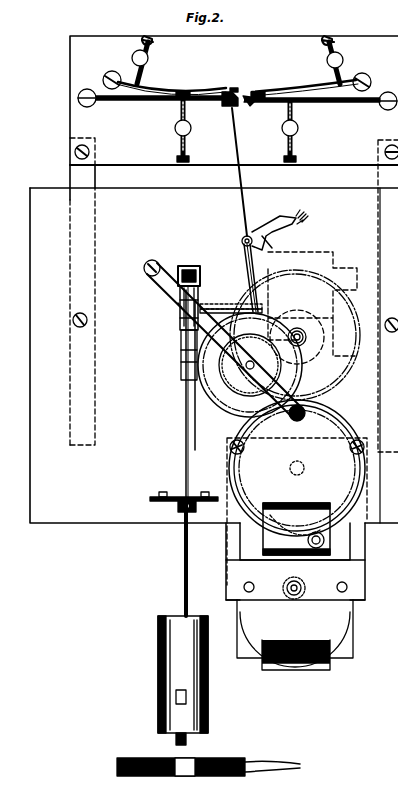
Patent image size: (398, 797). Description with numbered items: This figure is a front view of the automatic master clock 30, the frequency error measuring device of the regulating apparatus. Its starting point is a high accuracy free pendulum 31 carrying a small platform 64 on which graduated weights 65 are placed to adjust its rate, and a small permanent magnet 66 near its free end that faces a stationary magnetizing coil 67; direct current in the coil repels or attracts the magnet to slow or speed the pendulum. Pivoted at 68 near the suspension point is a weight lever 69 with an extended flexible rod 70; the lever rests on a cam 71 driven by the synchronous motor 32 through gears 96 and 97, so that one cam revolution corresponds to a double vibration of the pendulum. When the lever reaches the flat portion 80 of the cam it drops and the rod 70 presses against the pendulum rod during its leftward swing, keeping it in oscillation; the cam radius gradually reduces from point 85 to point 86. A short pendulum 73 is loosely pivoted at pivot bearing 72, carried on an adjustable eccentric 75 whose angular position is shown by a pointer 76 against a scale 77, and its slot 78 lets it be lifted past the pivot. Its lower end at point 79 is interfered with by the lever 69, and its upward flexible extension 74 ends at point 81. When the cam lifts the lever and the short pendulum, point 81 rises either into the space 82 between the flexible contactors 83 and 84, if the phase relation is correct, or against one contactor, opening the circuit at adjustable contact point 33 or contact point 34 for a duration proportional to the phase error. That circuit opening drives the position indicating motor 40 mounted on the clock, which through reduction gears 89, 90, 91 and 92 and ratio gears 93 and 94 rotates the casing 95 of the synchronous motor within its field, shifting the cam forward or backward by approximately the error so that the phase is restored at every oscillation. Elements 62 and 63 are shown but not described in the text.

The master clock 30 is at (140, 213).
The free pendulum 31 is at (182, 566).
The synchronous motor 32 is at (333, 252).
The adjustable contact point 33 is at (170, 102).
The contact point 34 is at (297, 104).
The position indicating motor 40 is at (355, 575).
The spring arm 62 is at (190, 92).
The spring arm 63 is at (262, 90).
The platform 64 is at (154, 502).
The graduated weights 65 is at (156, 492).
The permanent magnet 66 is at (158, 707).
The magnetizing coil 67 is at (114, 767).
The pivot 68 is at (178, 304).
The weight lever 69 is at (222, 304).
The flexible rod 70 is at (188, 412).
The cam 71 is at (228, 407).
The pivot bearing 72 is at (240, 240).
The short pendulum 73 is at (246, 254).
The flexible extension 74 is at (236, 151).
The adjustable eccentric 75 is at (264, 230).
The pointer 76 is at (280, 236).
The scale 77 is at (305, 216).
The slot 78 is at (249, 270).
The lower end point 79 is at (260, 310).
The flat portion 80 is at (180, 348).
The upper end point 81 is at (226, 106).
The space 82 is at (234, 90).
The flexible contactor 83 is at (101, 106).
The flexible contactor 84 is at (280, 104).
The cam point 85 is at (181, 372).
The cam point 86 is at (182, 312).
The reduction gear 89 is at (305, 592).
The reduction gear 90 is at (366, 545).
The reduction gear 91 is at (324, 538).
The reduction gear 92 is at (356, 473).
The ratio gear 93 is at (353, 435).
The ratio gear 94 is at (338, 392).
The casing 95 is at (314, 356).
The gear 96 is at (306, 334).
The gear 97 is at (271, 365).